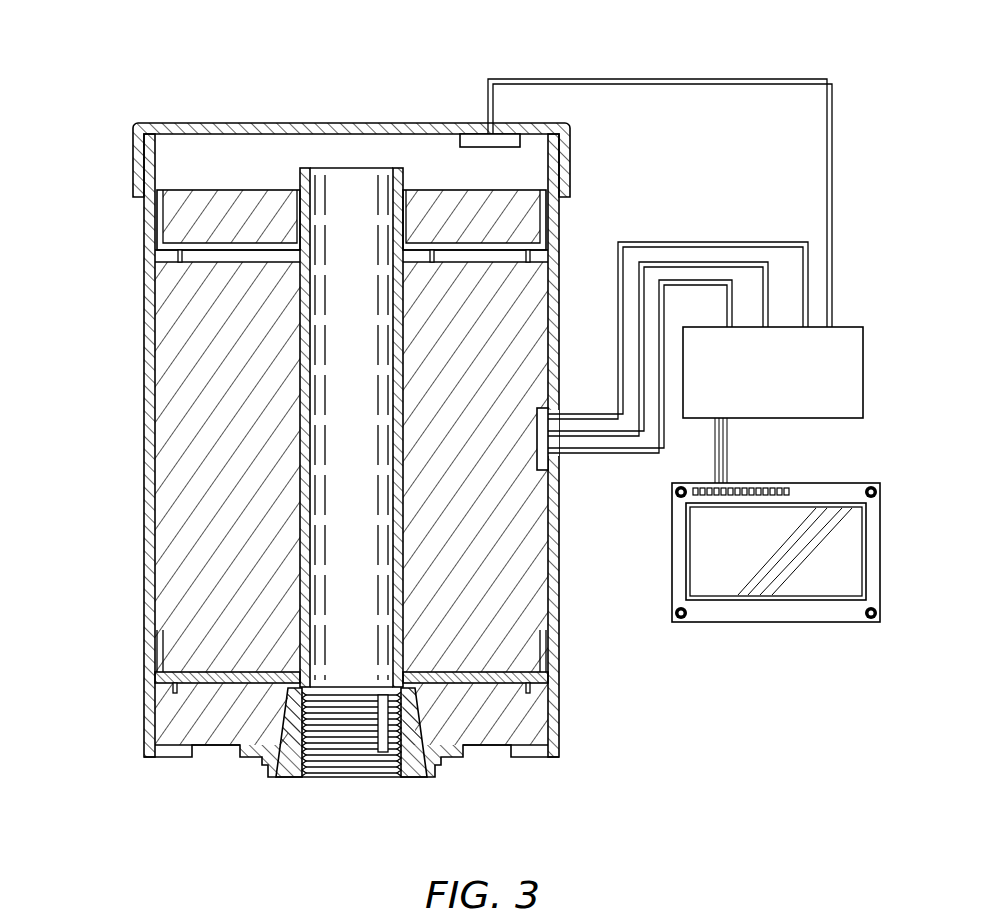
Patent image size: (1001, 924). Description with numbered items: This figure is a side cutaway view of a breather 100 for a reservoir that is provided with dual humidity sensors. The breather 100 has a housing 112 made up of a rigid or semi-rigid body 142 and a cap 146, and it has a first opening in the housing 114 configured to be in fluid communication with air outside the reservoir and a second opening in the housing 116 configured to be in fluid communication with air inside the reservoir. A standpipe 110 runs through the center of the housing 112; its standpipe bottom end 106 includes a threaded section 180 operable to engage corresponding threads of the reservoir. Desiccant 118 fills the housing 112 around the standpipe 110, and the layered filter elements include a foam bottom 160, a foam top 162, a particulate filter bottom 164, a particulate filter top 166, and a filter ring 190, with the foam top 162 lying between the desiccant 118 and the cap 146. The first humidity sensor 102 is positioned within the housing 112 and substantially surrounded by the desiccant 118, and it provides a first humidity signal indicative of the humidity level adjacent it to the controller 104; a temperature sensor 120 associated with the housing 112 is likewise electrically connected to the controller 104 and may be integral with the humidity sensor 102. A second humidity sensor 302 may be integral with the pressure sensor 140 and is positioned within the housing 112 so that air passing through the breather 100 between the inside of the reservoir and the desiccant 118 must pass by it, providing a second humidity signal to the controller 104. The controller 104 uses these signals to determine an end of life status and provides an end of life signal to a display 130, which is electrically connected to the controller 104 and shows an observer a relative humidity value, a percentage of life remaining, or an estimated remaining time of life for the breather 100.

The breather 100 is at (640, 62).
The humidity sensor 102 is at (548, 463).
The controller 104 is at (843, 327).
The standpipe bottom end 106 is at (365, 560).
The standpipe 110 is at (345, 462).
The housing 112 is at (574, 226).
The first opening in the housing 114 is at (212, 753).
The second opening in the housing 116 is at (351, 769).
The desiccant 118 is at (195, 394).
The temperature sensor 120 is at (548, 413).
The display 130 is at (815, 483).
The pressure sensor 140 is at (484, 132).
The body 142 is at (318, 477).
The cap 146 is at (141, 150).
The foam bottom 160 is at (195, 722).
The foam top 162 is at (185, 218).
The particulate filter bottom 164 is at (195, 670).
The particulate filter top 166 is at (180, 250).
The threaded section 180 is at (323, 762).
The filter ring 190 is at (205, 262).
The second humidity sensor 302 is at (478, 132).